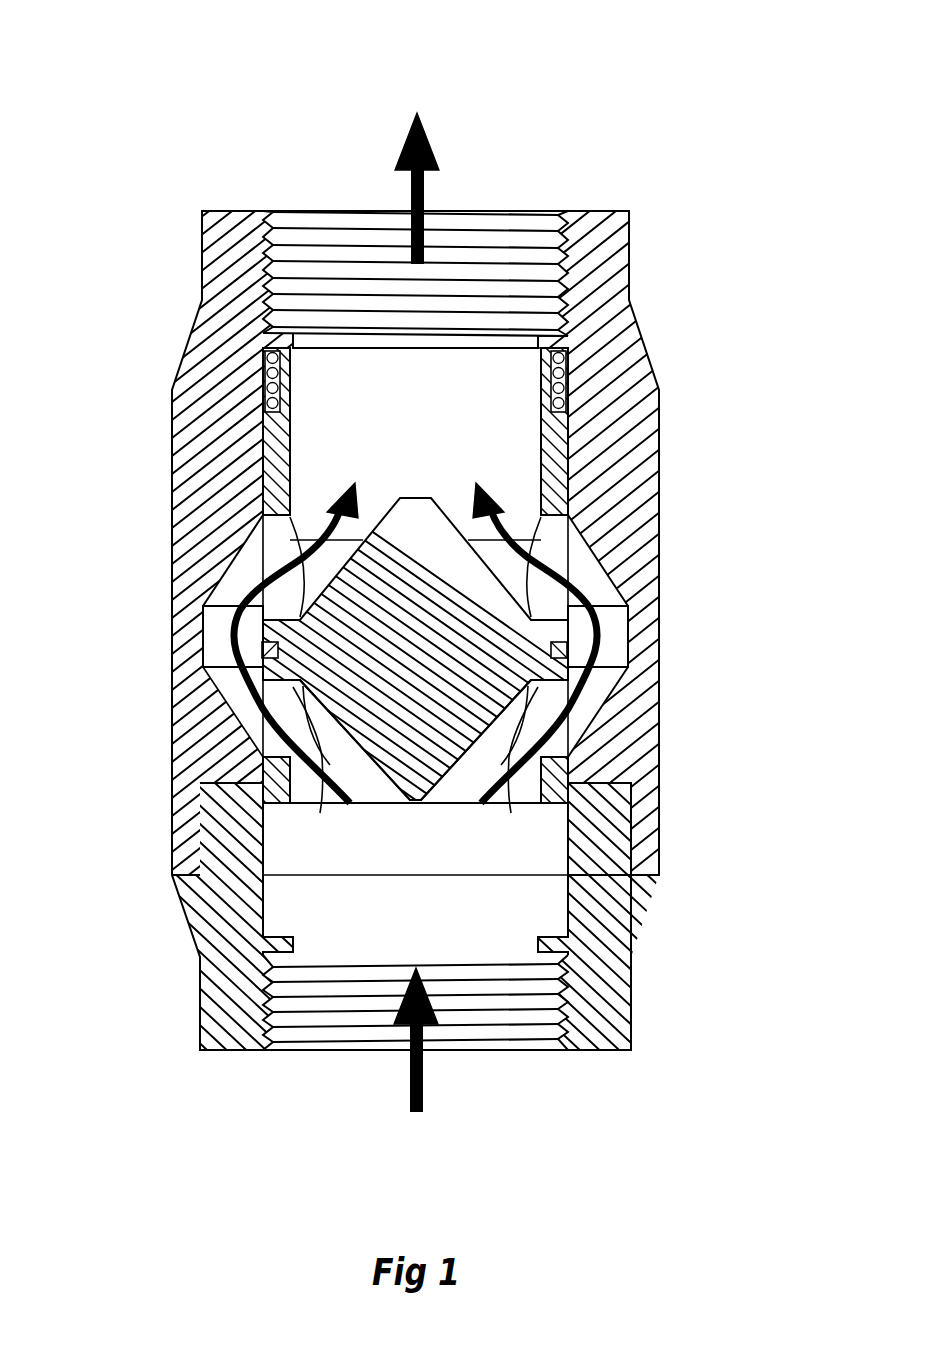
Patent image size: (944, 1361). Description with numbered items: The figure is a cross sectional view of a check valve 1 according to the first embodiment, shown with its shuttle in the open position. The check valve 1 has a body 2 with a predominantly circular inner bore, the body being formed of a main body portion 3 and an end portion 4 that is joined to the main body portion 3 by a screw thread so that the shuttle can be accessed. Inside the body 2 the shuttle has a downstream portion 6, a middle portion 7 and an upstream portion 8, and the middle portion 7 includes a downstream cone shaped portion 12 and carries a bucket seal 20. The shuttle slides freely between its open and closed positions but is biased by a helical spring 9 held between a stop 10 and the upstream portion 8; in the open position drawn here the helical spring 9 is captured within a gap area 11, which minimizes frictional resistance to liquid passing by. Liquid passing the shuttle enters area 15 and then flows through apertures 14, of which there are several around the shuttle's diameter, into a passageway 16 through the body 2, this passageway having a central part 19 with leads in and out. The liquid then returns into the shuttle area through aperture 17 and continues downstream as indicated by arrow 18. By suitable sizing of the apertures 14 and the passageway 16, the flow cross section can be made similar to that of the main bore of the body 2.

The check valve 1 is at (635, 532).
The body 2 is at (650, 447).
The main body portion 3 is at (635, 747).
The end portion 4 is at (617, 970).
The downstream portion 6 is at (560, 787).
The middle portion 7 is at (570, 637).
The upstream portion 8 is at (548, 443).
The helical spring 9 is at (570, 360).
The stop 10 is at (568, 345).
The gap area 11 is at (255, 525).
The downstream cone shaped portion 12 is at (415, 770).
The apertures 14 is at (552, 743).
The area 15 is at (330, 760).
The passageway 16 is at (233, 683).
The aperture 17 is at (215, 653).
The arrow 18 is at (428, 140).
The central part 19 is at (235, 757).
The bucket seal 20 is at (560, 650).